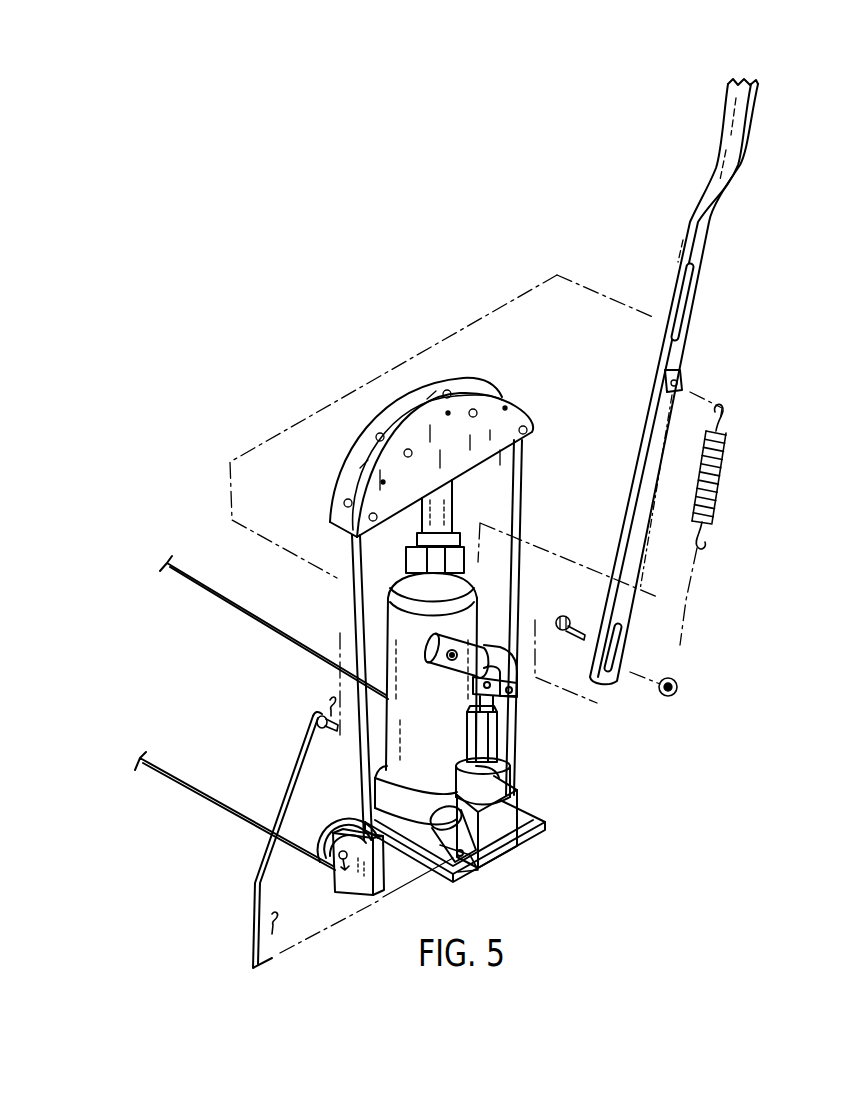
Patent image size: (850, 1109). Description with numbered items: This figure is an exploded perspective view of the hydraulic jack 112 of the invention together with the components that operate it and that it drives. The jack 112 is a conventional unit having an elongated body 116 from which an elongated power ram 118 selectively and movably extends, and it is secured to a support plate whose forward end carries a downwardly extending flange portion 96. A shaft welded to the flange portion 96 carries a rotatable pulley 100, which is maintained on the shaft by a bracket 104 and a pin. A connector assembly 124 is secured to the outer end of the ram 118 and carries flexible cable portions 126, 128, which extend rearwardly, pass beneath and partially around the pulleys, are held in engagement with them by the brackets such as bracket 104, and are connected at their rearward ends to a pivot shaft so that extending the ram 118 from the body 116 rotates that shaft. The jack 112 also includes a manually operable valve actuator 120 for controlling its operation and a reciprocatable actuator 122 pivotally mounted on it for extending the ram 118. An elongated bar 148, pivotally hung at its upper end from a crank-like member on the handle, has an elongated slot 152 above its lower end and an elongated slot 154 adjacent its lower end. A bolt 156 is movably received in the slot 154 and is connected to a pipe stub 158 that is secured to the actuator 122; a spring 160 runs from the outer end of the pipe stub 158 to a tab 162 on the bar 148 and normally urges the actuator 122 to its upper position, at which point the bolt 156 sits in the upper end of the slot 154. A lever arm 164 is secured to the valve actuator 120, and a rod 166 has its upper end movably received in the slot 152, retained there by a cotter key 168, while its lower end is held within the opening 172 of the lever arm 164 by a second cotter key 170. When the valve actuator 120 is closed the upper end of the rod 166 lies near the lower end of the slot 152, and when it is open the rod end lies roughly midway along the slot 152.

The flange portion 96 is at (418, 866).
The pulley 100 is at (330, 843).
The bracket 104 is at (362, 882).
The hydraulic jack 112 is at (502, 783).
The elongated body 116 is at (443, 720).
The power ram 118 is at (448, 507).
The valve actuator 120 is at (458, 823).
The reciprocatable actuator 122 is at (508, 652).
The connector assembly 124 is at (498, 432).
The cable portion 126 is at (338, 577).
The cable portion 128 is at (517, 505).
The elongated bar 148 is at (738, 145).
The elongated slot 152 is at (693, 300).
The elongated slot 154 is at (615, 648).
The bolt 156 is at (563, 612).
The pipe stub 158 is at (430, 660).
The spring 160 is at (718, 456).
The tab 162 is at (680, 378).
The lever arm 164 is at (503, 869).
The rod 166 is at (290, 762).
The cotter key 168 is at (330, 700).
The cotter key 170 is at (274, 912).
The opening 172 is at (455, 862).